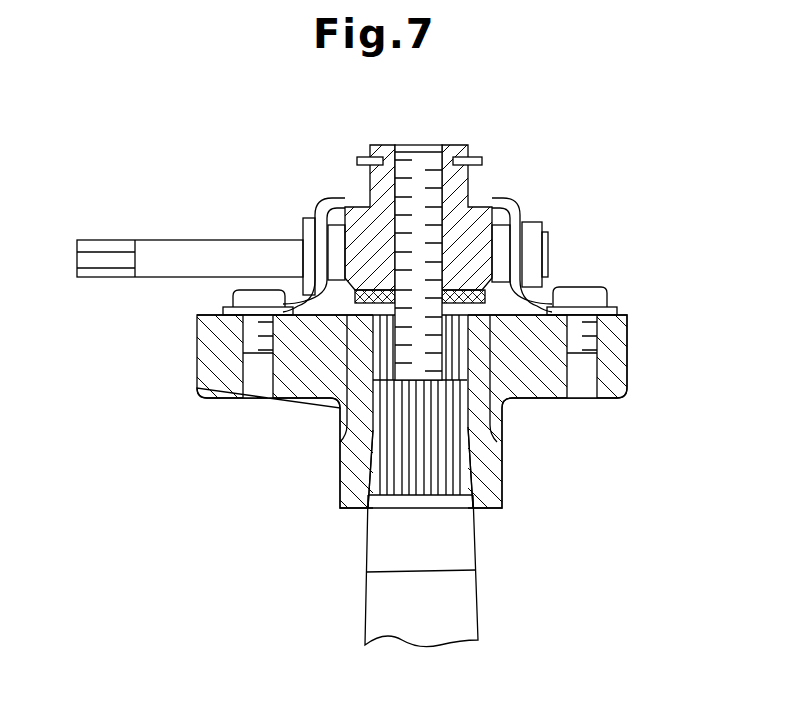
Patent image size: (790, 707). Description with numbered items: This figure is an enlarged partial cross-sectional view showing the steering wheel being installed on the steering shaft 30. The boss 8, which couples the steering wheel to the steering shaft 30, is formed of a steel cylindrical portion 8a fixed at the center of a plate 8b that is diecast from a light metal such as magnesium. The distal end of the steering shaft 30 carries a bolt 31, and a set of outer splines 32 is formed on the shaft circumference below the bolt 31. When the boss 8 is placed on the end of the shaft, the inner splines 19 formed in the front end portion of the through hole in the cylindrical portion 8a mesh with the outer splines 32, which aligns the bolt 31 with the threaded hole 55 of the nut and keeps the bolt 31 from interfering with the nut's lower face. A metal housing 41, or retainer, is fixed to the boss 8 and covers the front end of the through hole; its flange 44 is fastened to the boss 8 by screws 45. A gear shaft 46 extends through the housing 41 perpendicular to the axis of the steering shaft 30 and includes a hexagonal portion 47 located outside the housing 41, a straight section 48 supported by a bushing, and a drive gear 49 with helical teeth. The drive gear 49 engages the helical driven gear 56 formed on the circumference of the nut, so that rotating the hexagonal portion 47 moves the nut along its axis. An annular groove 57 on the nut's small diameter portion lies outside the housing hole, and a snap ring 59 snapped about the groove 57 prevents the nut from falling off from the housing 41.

The boss 8 is at (278, 441).
The cylindrical portion 8a is at (340, 497).
The plate 8b is at (200, 388).
The inner splines 19 is at (458, 350).
The steering shaft 30 is at (478, 600).
The bolt 31 is at (470, 395).
The outer splines 32 is at (468, 428).
The housing 41 is at (500, 200).
The flange 44 is at (617, 305).
The screws 45 is at (233, 292).
The gear shaft 46 is at (191, 206).
The hexagonal portion 47 is at (108, 240).
The straight section 48 is at (201, 240).
The drive gear 49 is at (338, 310).
The threaded hole 55 is at (432, 150).
The driven gear 56 is at (345, 203).
The annular groove 57 is at (482, 163).
The snap ring 59 is at (357, 160).